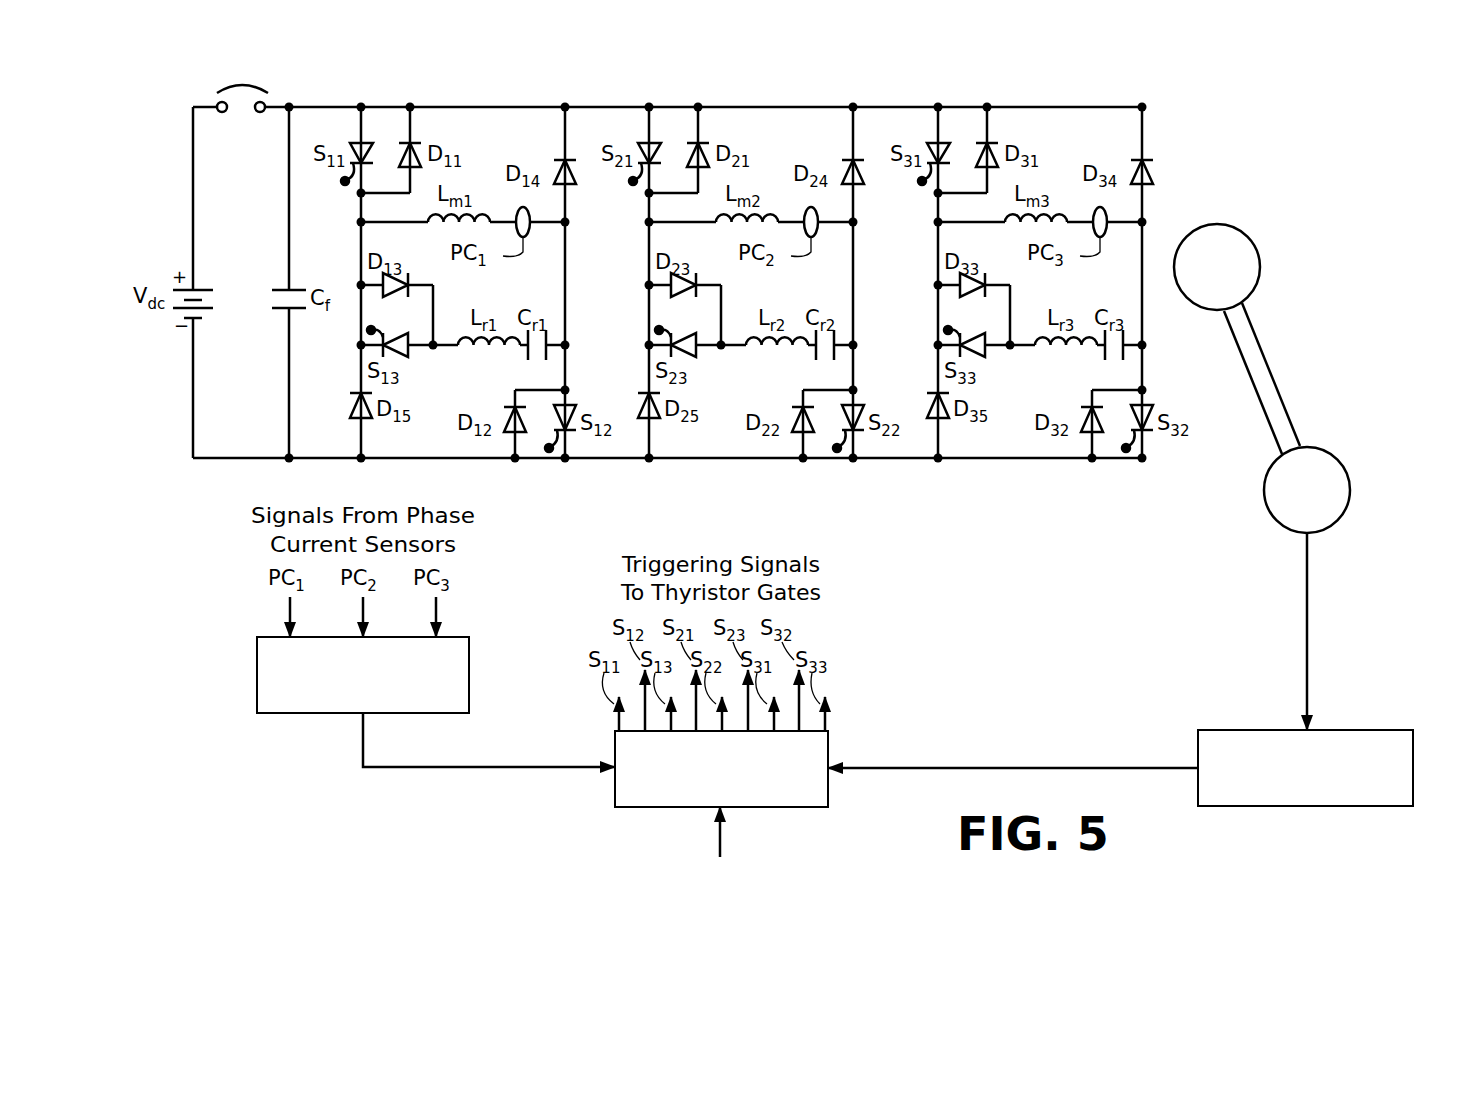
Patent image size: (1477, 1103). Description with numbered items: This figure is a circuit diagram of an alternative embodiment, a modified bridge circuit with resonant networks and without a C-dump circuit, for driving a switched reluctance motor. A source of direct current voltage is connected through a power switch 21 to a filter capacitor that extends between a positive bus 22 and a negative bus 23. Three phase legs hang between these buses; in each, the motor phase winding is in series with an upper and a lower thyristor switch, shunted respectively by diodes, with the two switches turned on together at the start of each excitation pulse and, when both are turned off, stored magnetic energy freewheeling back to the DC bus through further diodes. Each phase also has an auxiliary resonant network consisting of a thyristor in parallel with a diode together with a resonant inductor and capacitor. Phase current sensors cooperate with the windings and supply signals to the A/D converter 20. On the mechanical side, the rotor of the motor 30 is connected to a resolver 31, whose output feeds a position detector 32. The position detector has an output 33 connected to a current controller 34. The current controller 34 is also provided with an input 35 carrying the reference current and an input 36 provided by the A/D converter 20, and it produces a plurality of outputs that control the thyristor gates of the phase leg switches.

The A/D converter 20 is at (290, 715).
The power switch 21 is at (235, 113).
The positive bus 22 is at (326, 107).
The negative bus 23 is at (198, 461).
The rotor of the motor 30 is at (1254, 243).
The resolver 31 is at (1338, 458).
The position detector 32 is at (1382, 730).
The output of the position detector 33 is at (1137, 767).
The current controller 34 is at (806, 808).
The input of Iref 35 is at (712, 814).
The input from the A/D converter 36 is at (391, 772).